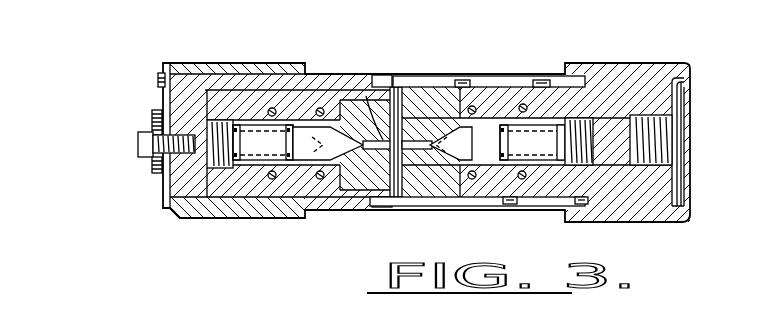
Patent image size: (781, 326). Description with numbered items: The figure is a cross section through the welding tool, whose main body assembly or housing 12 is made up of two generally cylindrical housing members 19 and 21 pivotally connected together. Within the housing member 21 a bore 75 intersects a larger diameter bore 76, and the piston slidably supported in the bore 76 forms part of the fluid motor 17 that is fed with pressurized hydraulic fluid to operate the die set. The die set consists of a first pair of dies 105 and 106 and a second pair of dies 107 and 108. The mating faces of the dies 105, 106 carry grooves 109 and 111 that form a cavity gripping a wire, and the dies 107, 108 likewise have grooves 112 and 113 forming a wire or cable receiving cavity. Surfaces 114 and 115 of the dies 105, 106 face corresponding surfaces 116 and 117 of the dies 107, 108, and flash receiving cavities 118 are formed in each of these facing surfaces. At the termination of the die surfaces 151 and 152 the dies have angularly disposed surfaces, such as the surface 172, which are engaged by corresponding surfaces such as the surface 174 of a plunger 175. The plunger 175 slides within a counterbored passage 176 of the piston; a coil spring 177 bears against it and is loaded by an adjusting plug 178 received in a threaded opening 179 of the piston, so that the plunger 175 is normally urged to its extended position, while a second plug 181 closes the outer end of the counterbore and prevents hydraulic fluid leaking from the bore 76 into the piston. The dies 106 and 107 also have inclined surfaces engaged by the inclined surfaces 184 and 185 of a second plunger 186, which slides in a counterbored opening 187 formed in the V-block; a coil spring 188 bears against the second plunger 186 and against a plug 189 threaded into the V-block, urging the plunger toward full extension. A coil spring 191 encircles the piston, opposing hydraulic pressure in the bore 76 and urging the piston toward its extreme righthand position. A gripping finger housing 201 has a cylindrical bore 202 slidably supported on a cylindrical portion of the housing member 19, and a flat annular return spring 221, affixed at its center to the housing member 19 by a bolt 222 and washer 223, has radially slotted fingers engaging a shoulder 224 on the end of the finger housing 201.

The housing 12 is at (623, 60).
The fluid motor 17 is at (688, 208).
The housing member 19 is at (168, 219).
The housing member 21 is at (632, 214).
The bore 75 is at (687, 143).
The bore 76 is at (652, 77).
The die 105 is at (430, 88).
The die 106 is at (366, 96).
The die 107 is at (432, 194).
The die 108 is at (338, 198).
The groove 109 is at (404, 108).
The groove 111 is at (395, 76).
The groove 112 is at (407, 204).
The groove 113 is at (382, 204).
The surface 114 is at (458, 76).
The surface 115 is at (388, 148).
The surface 116 is at (420, 150).
The surface 117 is at (342, 208).
The flash receiving cavities 118 is at (358, 150).
The die surface 151 is at (472, 82).
The die surface 152 is at (448, 176).
The angularly disposed surface 172 is at (484, 100).
The surface 174 is at (464, 149).
The plunger 175 is at (528, 110).
The counterbored passage 176 is at (552, 163).
The coil spring 177 is at (572, 118).
The adjusting plug 178 is at (580, 125).
The threaded opening 179 is at (595, 141).
The second plug 181 is at (667, 113).
The inclined surface 184 is at (343, 124).
The inclined surface 185 is at (333, 170).
The second plunger 186 is at (290, 173).
The counterbored opening 187 is at (252, 125).
The coil spring 188 is at (243, 162).
The plug 189 is at (218, 120).
The coil spring 191 is at (522, 204).
The gripping finger housing 201 is at (181, 62).
The cylindrical bore 202 is at (198, 207).
The return spring 221 is at (160, 195).
The bolt 222 is at (138, 143).
The washer 223 is at (152, 124).
The shoulder 224 is at (160, 80).